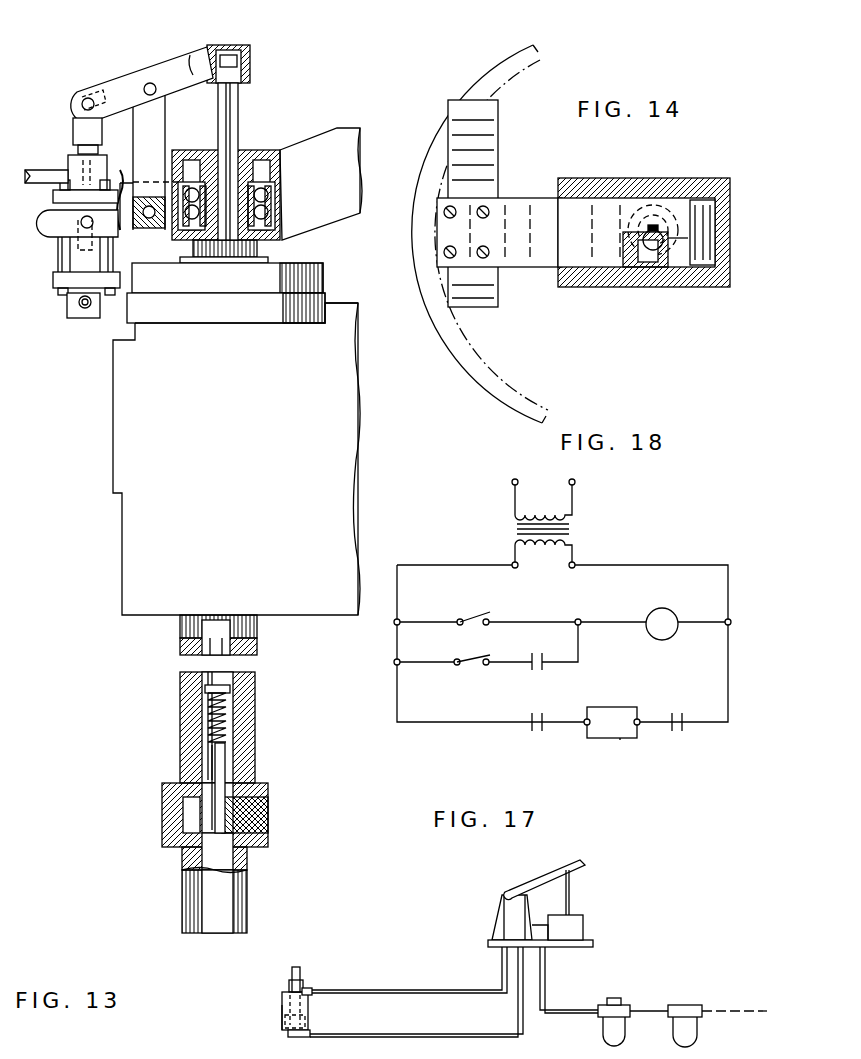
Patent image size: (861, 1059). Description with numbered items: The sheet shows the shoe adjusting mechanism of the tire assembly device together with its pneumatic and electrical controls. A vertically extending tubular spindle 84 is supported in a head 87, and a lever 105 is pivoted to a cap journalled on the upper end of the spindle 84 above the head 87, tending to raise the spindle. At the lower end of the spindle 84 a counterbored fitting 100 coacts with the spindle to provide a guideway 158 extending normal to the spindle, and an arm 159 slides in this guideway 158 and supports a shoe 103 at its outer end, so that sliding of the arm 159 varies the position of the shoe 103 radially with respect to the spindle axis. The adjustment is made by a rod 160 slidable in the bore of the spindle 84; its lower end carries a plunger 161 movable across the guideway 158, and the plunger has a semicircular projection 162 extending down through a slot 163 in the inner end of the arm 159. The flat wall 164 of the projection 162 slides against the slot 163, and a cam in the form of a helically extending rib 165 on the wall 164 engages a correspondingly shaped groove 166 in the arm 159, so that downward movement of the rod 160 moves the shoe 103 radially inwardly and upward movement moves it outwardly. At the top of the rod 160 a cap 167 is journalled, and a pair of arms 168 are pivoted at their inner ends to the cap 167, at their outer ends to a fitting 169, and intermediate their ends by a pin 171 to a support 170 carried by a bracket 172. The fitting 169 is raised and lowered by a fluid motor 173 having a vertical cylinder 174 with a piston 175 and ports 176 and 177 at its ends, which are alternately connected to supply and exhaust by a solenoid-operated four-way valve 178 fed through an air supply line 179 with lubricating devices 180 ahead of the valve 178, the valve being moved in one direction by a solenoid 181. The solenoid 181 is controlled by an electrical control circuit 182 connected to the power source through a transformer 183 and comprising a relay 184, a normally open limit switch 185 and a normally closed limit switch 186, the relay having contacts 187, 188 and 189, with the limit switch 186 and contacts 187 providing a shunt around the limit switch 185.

In FIG. 13, the spindle 84 is at (242, 281).
In FIG. 13, the head 87 is at (112, 387).
In FIG. 13, the counterbored fitting 100 is at (247, 900).
In FIG. 14, the shoe 103 is at (425, 290).
In FIG. 13, the lever 105 is at (322, 208).
In FIG. 14, the guideway 158 is at (690, 198).
In FIG. 13, the arm 159 is at (248, 822).
In FIG. 14, the arm 159 is at (525, 205).
In FIG. 13, the rod 160 is at (232, 655).
In FIG. 13, the plunger 161 is at (230, 708).
In FIG. 14, the plunger 161 is at (718, 180).
In FIG. 13, the semicircular projection 162 is at (205, 756).
In FIG. 14, the semicircular projection 162 is at (658, 250).
In FIG. 14, the slot 163 is at (630, 265).
In FIG. 14, the wall 164 is at (645, 222).
In FIG. 13, the helically extending rib 165 is at (225, 775).
In FIG. 14, the helically extending rib 165 is at (655, 225).
In FIG. 13, the groove 166 is at (240, 813).
In FIG. 14, the groove 166 is at (668, 232).
In FIG. 13, the cap 167 is at (250, 78).
In FIG. 13, the arms 168 is at (180, 65).
In FIG. 13, the fitting 169 is at (77, 130).
In FIG. 13, the support 170 is at (148, 148).
In FIG. 13, the pin 171 is at (147, 83).
In FIG. 13, the bracket 172 is at (150, 215).
In FIG. 13, the fluid motor 173 is at (75, 250).
In FIG. 17, the fluid motor 173 is at (277, 1023).
In FIG. 13, the vertical cylinder 174 is at (70, 168).
In FIG. 17, the vertical cylinder 174 is at (282, 1002).
In FIG. 13, the piston 175 is at (64, 308).
In FIG. 17, the piston 175 is at (310, 1018).
In FIG. 13, the port 176 is at (42, 176).
In FIG. 17, the port 176 is at (310, 988).
In FIG. 13, the port 177 is at (85, 308).
In FIG. 17, the port 177 is at (300, 1037).
In FIG. 18, the solenoid-operated four-way valve 178 is at (626, 705).
In FIG. 17, the solenoid-operated four-way valve 178 is at (492, 906).
In FIG. 17, the air supply line 179 is at (712, 1010).
In FIG. 17, the lubricating devices 180 is at (683, 1030).
In FIG. 18, the solenoid 181 is at (620, 738).
In FIG. 17, the solenoid 181 is at (583, 930).
In FIG. 18, the control circuit 182 is at (653, 577).
In FIG. 18, the transformer 183 is at (581, 520).
In FIG. 18, the relay 184 is at (668, 613).
In FIG. 18, the normally open limit switch 185 is at (478, 612).
In FIG. 18, the normally closed limit switch 186 is at (476, 665).
In FIG. 18, the relay contacts 187 is at (536, 652).
In FIG. 18, the relay contacts 188 is at (542, 712).
In FIG. 18, the relay contacts 189 is at (677, 712).